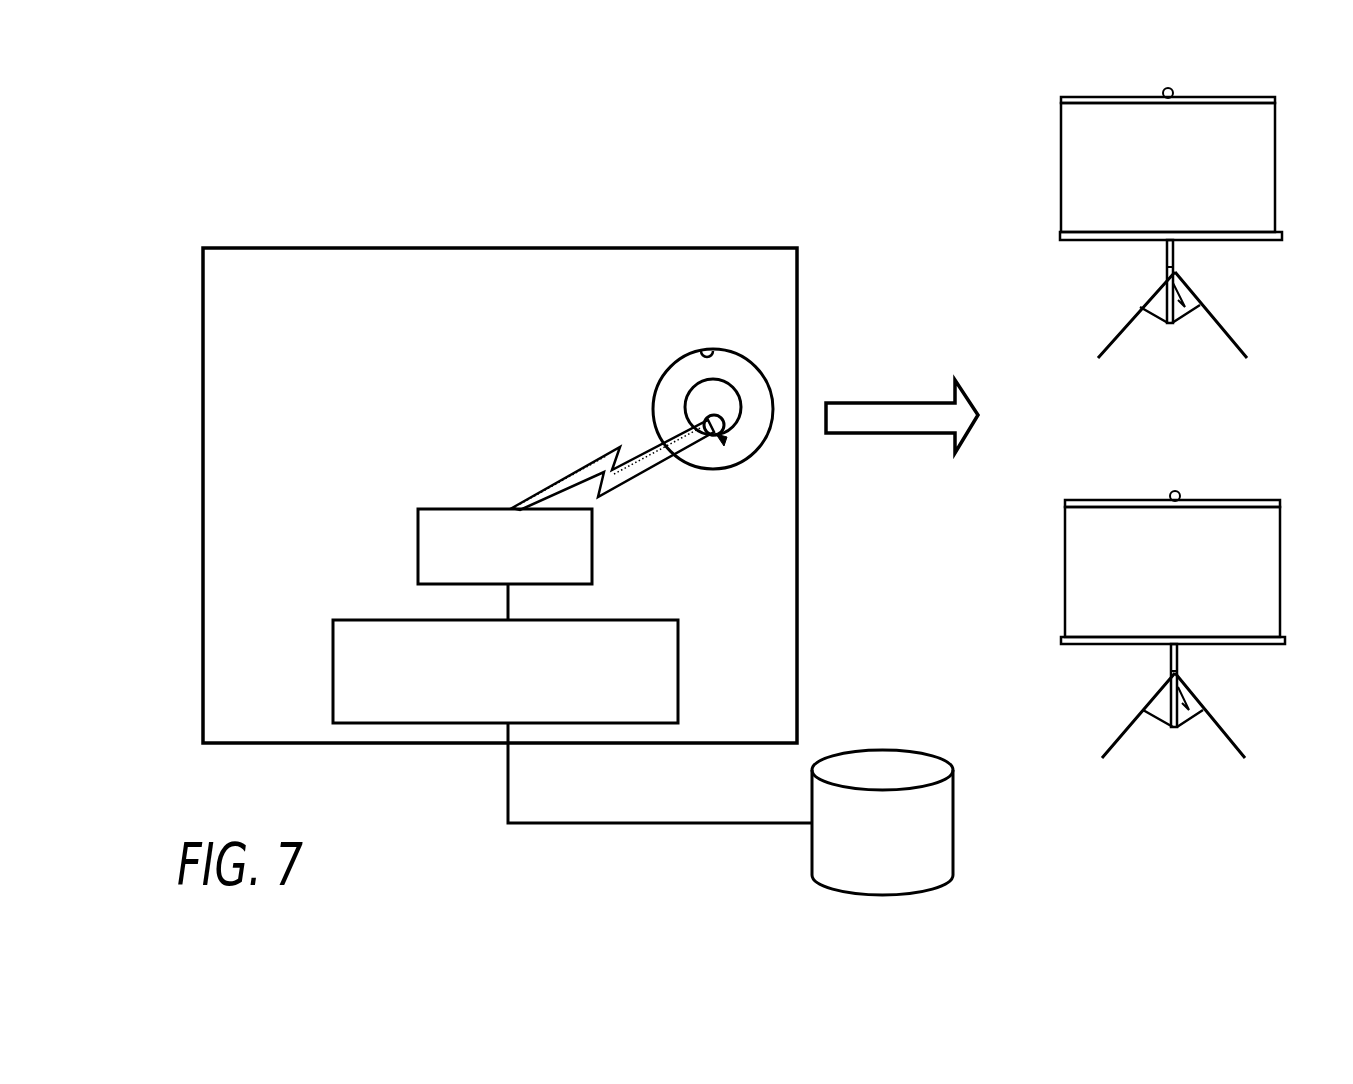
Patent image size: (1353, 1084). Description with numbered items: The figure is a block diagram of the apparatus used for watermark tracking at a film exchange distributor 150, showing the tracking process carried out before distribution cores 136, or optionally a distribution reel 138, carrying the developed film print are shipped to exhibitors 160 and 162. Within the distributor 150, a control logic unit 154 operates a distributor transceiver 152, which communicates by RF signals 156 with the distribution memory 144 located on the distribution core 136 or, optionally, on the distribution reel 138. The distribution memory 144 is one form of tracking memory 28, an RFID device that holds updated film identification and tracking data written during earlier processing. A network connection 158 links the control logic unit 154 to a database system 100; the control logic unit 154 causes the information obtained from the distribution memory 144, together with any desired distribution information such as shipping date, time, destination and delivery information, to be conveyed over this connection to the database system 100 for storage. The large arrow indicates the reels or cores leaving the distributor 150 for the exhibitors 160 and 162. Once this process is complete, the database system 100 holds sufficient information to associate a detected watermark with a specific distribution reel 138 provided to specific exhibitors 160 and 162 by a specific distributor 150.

The film exchange distributor 150 is at (600, 247).
The distributor transceiver 152 is at (418, 545).
The control logic unit 154 is at (333, 666).
The RF signals 156 is at (637, 478).
The network connection 158 is at (656, 823).
The distribution reel 138 is at (703, 350).
The distribution core 136 is at (740, 393).
The distribution memory 144 is at (707, 418).
The tracking memory 28 is at (724, 446).
The database system 100 is at (953, 820).
The exhibitor 160 is at (1061, 175).
The exhibitor 162 is at (1065, 588).